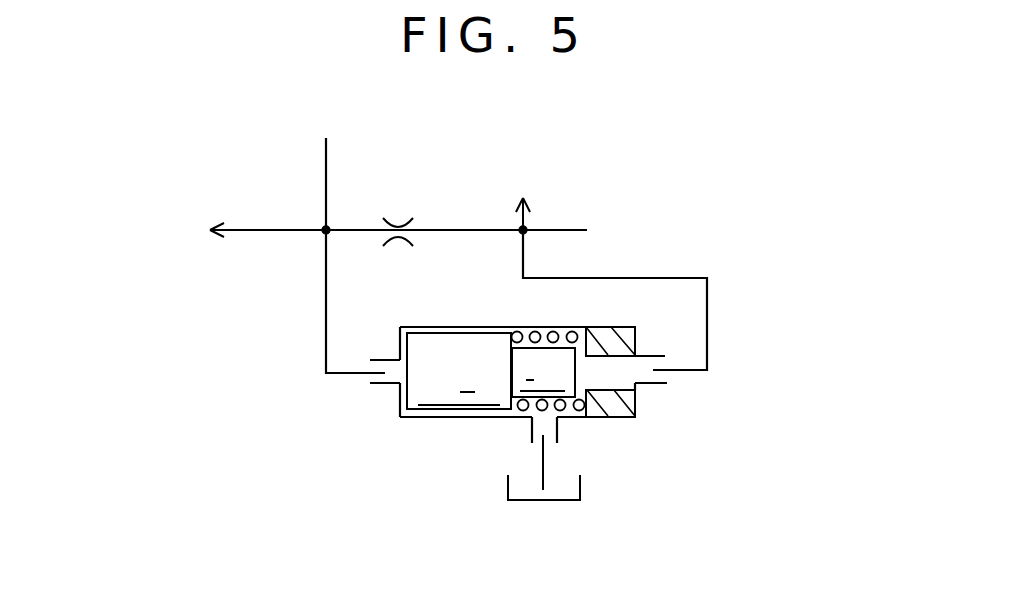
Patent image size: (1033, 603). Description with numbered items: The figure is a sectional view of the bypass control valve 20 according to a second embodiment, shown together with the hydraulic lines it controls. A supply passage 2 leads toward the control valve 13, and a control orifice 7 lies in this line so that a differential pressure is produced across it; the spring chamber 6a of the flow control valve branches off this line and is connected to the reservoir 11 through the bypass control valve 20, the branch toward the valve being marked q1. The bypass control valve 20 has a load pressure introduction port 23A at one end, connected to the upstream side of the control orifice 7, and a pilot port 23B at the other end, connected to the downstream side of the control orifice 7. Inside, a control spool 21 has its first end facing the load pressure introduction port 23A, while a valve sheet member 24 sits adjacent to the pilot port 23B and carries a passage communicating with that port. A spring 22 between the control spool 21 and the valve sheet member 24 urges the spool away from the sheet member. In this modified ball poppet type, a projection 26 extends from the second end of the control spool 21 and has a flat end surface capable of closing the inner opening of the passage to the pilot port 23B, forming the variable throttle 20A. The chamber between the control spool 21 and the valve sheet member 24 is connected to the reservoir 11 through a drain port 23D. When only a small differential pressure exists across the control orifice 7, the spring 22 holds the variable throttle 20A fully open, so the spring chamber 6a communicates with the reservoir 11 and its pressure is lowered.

The supply passage 2 is at (325, 164).
The control orifice 7 is at (399, 215).
The control valve 13 is at (191, 233).
The spring chamber 6a is at (521, 193).
The pilot flow passage q1 is at (641, 300).
The bypass control valve 20 is at (458, 327).
The variable throttle 20A is at (582, 390).
The control spool 21 is at (445, 400).
The spring 22 is at (555, 330).
The projection 26 is at (580, 372).
The valve sheet member 24 is at (618, 403).
The load pressure introduction port 23A is at (383, 380).
The pilot port 23B is at (650, 378).
The drain port 23D is at (534, 438).
The reservoir 11 is at (570, 502).